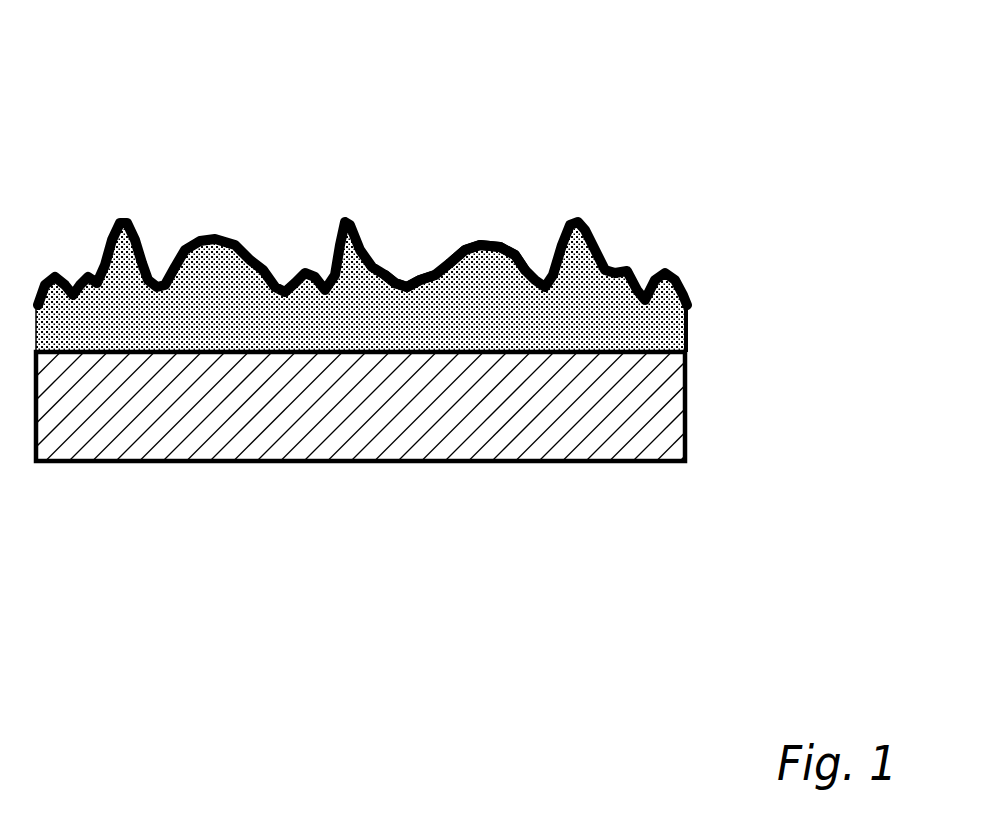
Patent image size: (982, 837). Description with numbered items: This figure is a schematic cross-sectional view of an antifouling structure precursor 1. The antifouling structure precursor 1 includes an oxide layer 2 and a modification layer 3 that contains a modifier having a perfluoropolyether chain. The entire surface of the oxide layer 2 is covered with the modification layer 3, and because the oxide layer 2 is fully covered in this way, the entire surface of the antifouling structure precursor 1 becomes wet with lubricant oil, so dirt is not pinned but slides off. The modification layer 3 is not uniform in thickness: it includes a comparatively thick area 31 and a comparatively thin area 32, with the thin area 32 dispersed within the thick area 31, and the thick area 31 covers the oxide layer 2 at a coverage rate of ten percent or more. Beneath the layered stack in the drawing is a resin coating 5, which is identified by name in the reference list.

The laminate / coated article 1 is at (80, 46).
The base layer (porous layer) 2 is at (657, 323).
The surface layer (coating film) 3 is at (670, 272).
The protruding portion of surface layer 31 is at (492, 232).
The recessed portion of surface layer 32 is at (408, 258).
The substrate 5 is at (670, 412).